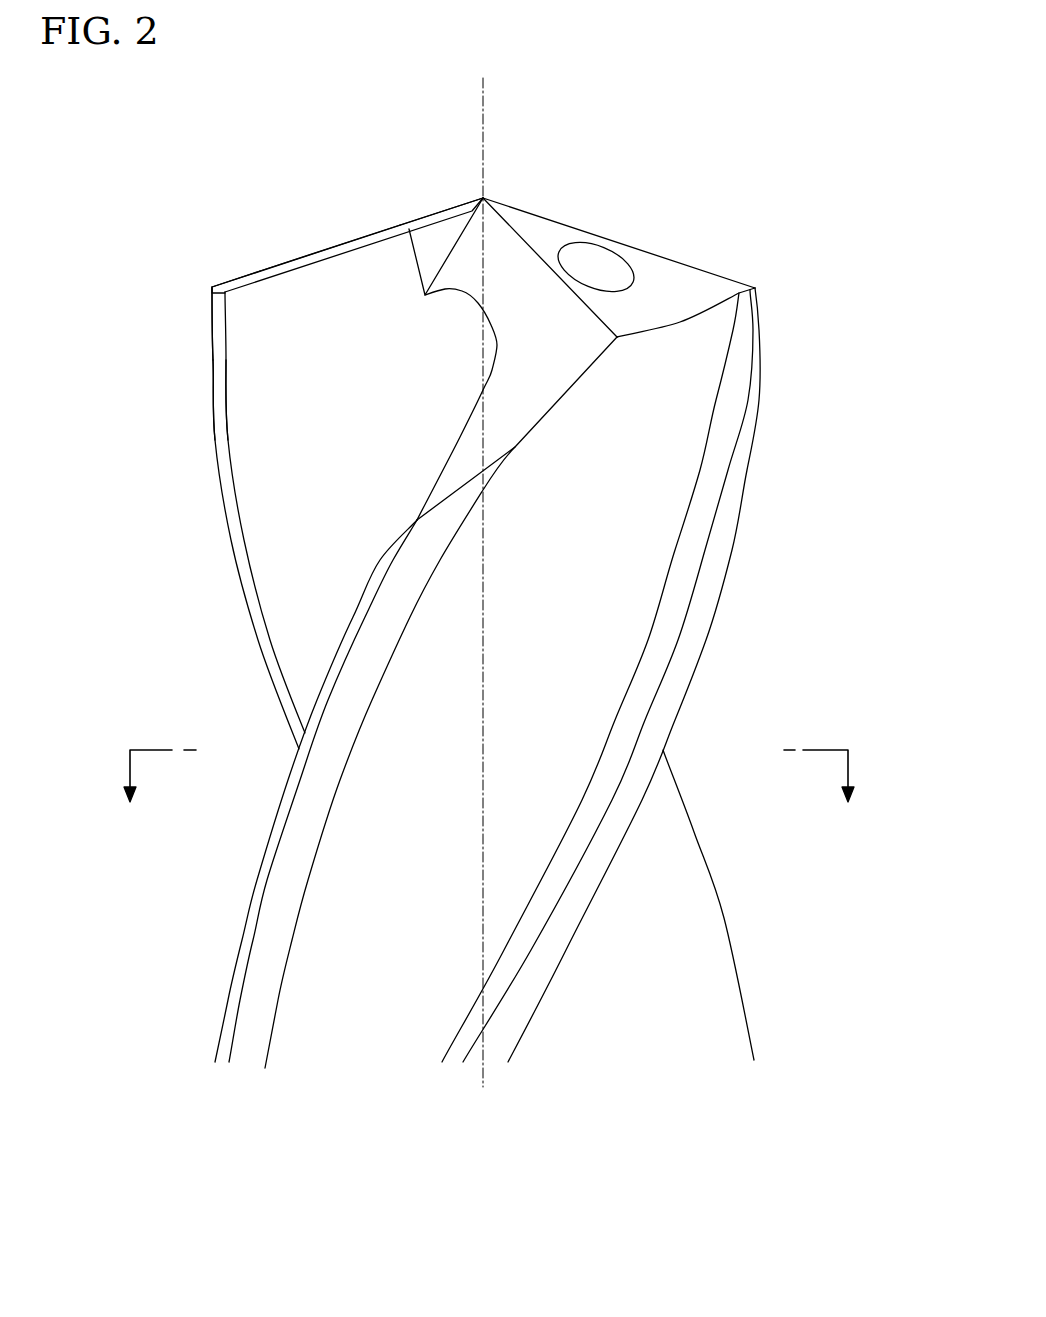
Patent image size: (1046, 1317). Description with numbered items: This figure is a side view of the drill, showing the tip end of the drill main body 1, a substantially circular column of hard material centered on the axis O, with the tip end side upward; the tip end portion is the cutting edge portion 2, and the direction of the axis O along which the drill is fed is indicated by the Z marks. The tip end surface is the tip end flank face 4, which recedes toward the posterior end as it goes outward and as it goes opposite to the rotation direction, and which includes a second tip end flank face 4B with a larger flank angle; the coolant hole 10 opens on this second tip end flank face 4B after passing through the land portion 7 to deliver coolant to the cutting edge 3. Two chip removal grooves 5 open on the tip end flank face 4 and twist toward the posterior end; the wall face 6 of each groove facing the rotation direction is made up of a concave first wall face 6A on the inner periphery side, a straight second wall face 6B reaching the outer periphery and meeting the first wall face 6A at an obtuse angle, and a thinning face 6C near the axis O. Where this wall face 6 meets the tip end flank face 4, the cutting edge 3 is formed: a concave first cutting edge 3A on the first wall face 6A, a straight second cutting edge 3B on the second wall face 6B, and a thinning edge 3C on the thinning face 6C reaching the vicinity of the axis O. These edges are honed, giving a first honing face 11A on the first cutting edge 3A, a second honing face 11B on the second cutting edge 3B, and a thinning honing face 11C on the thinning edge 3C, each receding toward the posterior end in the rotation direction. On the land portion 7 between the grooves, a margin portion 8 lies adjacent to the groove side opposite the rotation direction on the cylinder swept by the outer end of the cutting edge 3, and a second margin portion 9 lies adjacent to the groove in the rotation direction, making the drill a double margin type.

The drill main body 1 is at (766, 231).
The cutting edge portion 2 is at (760, 678).
The cutting edge 3 is at (297, 260).
The first cutting edge 3A is at (330, 208).
The second cutting edge 3B is at (222, 290).
The thinning edge 3C is at (427, 213).
The tip end flank face 4 is at (583, 250).
The second tip end flank face 4B is at (687, 305).
The chip removal groove 5 is at (260, 419).
The wall face 6 is at (147, 297).
The first wall face 6A is at (277, 303).
The second wall face 6B is at (218, 349).
The thinning face 6C is at (430, 250).
The land portion 7 is at (685, 375).
The margin portion (first margin portion) 8 is at (725, 535).
The margin portion (second margin portion) 9 is at (390, 563).
The coolant hole 10 is at (578, 255).
The first honing face 11A is at (357, 240).
The second honing face 11B is at (210, 288).
The thinning honing face 11C is at (470, 213).
The axis O is at (484, 568).
The axial direction Z is at (489, 776).